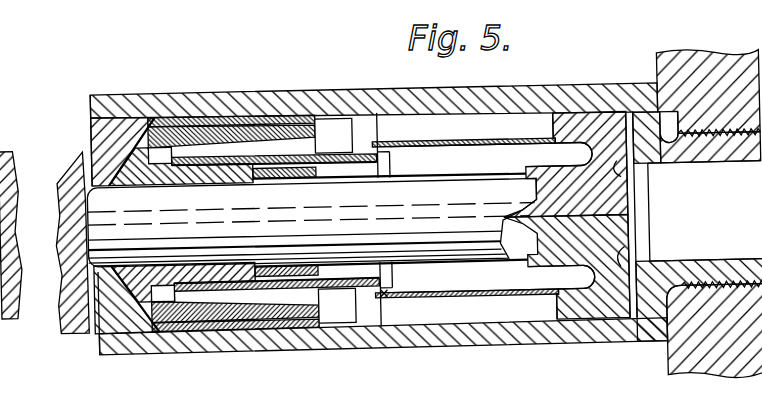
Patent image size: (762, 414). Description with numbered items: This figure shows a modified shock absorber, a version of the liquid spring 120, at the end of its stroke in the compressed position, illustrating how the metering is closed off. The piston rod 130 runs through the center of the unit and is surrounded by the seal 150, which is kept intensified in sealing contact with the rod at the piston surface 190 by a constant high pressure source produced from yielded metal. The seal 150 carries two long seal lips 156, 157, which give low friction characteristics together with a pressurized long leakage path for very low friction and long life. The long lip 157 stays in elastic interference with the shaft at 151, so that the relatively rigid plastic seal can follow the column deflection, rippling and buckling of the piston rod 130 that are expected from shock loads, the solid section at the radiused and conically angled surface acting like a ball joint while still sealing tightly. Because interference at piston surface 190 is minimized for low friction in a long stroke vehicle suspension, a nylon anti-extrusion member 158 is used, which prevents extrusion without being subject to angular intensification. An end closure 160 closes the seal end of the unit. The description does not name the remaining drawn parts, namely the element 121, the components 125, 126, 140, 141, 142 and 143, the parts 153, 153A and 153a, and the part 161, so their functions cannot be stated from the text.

The liquid spring 120 is at (232, 77).
The nut 121 is at (522, 88).
The sleeve 125 is at (294, 153).
The cone member 126 is at (182, 358).
The piston rod 130 is at (481, 184).
The washer 140 is at (627, 208).
The spacer ring 141 is at (454, 140).
The seal 142 is at (387, 302).
The lip 143 is at (627, 176).
The seal 150 is at (123, 352).
The elastic interference point 151 is at (231, 184).
The wedge 153 is at (284, 292).
The wedge surface 153A is at (262, 292).
The annular groove 153a is at (546, 307).
The seal lip 156 is at (290, 183).
The long lip 157 is at (309, 128).
The nylon anti-extrusion member 158 is at (97, 140).
The end closure 160 is at (95, 130).
The stop ring 161 is at (354, 126).
The piston surface 190 is at (168, 186).